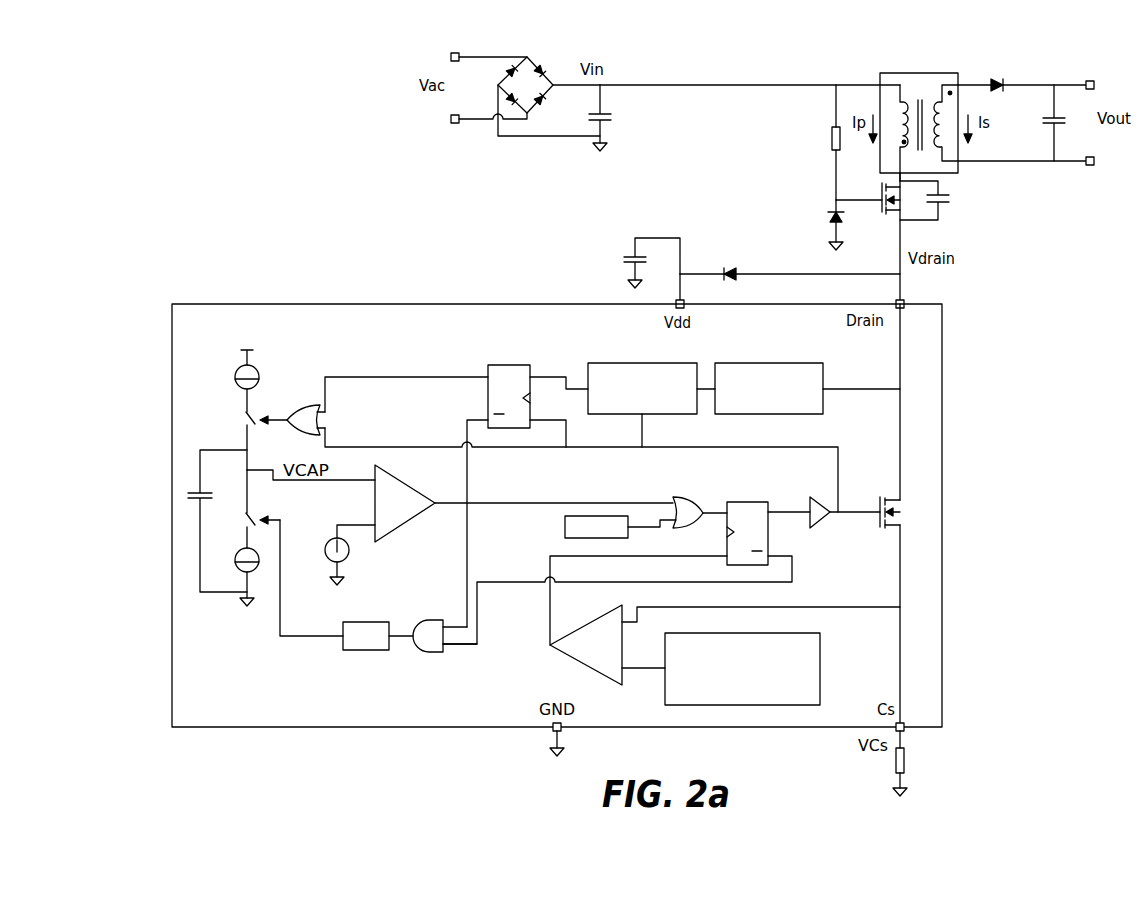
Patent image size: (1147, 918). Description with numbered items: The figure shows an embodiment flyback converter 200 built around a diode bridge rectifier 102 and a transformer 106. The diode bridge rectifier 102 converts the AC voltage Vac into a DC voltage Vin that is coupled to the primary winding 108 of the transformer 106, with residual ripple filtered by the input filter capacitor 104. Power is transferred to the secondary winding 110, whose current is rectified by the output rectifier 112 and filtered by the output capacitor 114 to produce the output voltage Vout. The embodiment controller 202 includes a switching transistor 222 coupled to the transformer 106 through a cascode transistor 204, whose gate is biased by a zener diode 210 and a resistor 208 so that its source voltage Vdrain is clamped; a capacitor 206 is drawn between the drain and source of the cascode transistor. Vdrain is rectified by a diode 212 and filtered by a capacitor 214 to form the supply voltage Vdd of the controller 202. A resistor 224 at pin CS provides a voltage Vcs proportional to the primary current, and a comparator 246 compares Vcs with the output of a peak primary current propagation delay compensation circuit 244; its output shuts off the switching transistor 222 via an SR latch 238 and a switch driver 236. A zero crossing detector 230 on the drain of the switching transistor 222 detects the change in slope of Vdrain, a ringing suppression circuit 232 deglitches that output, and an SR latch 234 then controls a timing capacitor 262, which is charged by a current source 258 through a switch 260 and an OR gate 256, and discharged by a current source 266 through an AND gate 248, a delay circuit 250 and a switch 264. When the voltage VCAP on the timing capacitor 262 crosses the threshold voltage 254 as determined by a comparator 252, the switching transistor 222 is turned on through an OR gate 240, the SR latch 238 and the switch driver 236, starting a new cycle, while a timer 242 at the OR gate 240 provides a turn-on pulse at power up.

The flyback converter 200 is at (184, 80).
The diode bridge rectifier 102 is at (540, 68).
The input filter capacitor 104 is at (589, 120).
The transformer 106 is at (932, 73).
The primary winding 108 is at (895, 133).
The secondary winding 110 is at (1012, 123).
The output rectifier 112 is at (998, 78).
The output capacitor 114 is at (1043, 117).
The resistor 208 is at (831, 136).
The zener diode 210 is at (828, 213).
The cascode transistor 204 is at (880, 214).
The capacitor 206 is at (945, 207).
The diode 212 is at (735, 270).
The capacitor 214 is at (630, 255).
The controller 202 is at (382, 303).
The current source 258 is at (237, 370).
The switch 260 is at (244, 412).
The OR gate 256 is at (318, 405).
The SR latch 234 is at (517, 365).
The ringing suppression circuit 232 is at (672, 363).
The zero crossing detector 230 is at (806, 363).
The timing capacitor 262 is at (206, 492).
The switch 264 is at (244, 522).
The current source 266 is at (238, 553).
The comparator 252 is at (410, 487).
The threshold voltage 254 is at (334, 539).
The timer 242 is at (565, 524).
The OR gate 240 is at (675, 500).
The SR latch 238 is at (752, 502).
The switch driver 236 is at (812, 500).
The switching transistor 222 is at (884, 497).
The delay circuit 250 is at (372, 621).
The AND gate 248 is at (436, 620).
The comparator 246 is at (601, 621).
The peak primary current propagation delay compensation circuit 244 is at (768, 633).
The resistor 224 is at (905, 765).